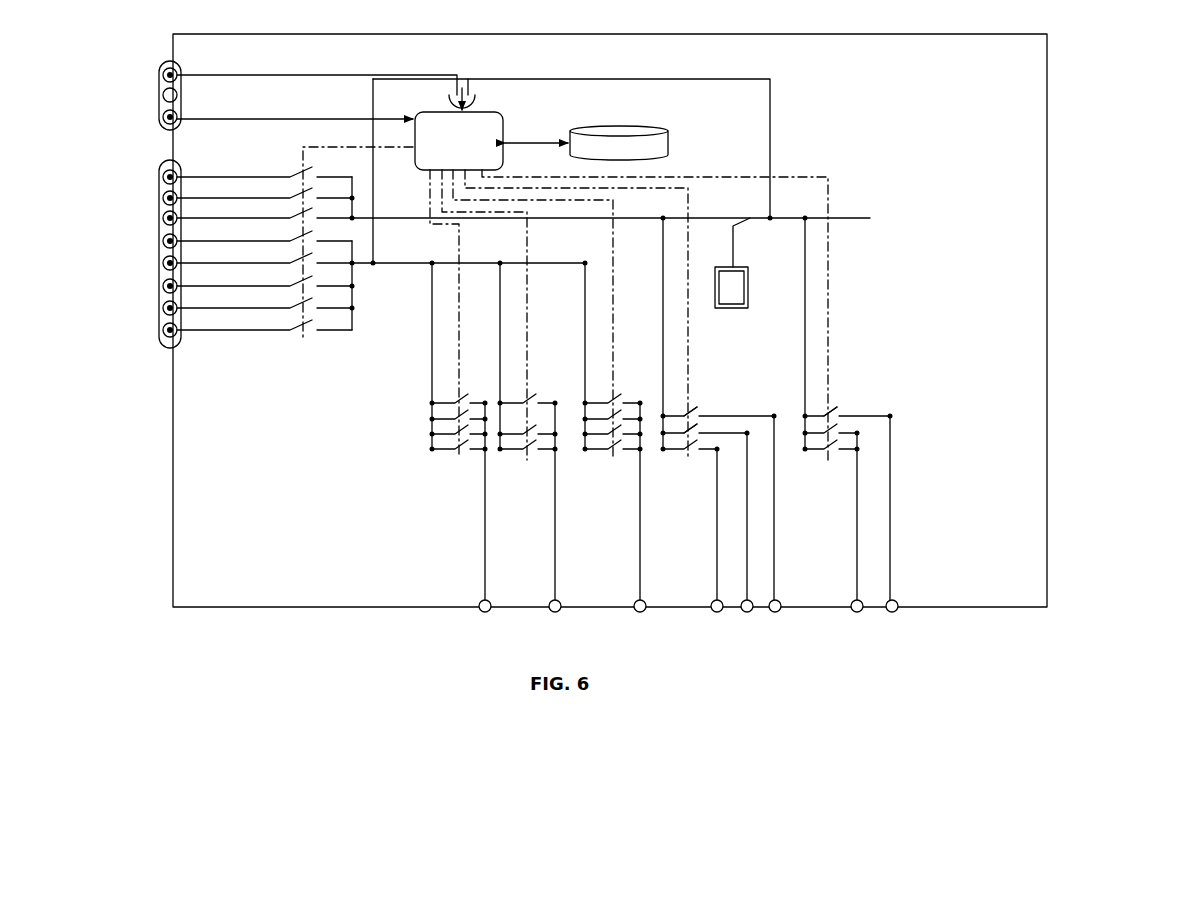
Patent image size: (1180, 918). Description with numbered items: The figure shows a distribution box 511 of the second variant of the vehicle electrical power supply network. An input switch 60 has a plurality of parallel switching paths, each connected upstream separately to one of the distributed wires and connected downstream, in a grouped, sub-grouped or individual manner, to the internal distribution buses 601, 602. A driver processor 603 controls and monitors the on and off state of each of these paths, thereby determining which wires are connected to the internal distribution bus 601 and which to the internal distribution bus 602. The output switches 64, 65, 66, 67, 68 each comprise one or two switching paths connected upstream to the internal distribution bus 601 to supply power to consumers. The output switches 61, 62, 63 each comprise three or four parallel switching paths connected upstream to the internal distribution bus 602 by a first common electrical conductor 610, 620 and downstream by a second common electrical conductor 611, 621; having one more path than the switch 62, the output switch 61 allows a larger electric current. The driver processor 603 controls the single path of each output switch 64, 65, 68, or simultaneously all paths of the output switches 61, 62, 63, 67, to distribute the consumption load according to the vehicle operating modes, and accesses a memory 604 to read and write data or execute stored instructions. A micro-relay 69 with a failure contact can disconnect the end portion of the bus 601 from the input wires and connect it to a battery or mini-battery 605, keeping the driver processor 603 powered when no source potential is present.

The distribution box 511 is at (1048, 304).
The input switch 60 is at (303, 340).
The internal distribution bus 601 is at (858, 218).
The internal distribution bus 602 is at (408, 266).
The driver processor 603 is at (503, 118).
The memory 604 is at (660, 125).
The battery or mini-battery 605 is at (748, 290).
The micro-relay 69 is at (752, 224).
The first common electrical conductor 610 is at (432, 370).
The second common electrical conductor 611 is at (485, 542).
The first common electrical conductor 620 is at (500, 352).
The second common electrical conductor 621 is at (555, 527).
The output switch 61 is at (455, 462).
The output switch 62 is at (524, 463).
The output switch 63 is at (607, 458).
The output switch 64 is at (681, 456).
The output switch 65 is at (700, 428).
The output switch 66 is at (684, 408).
The output switch 67 is at (826, 456).
The output switch 68 is at (822, 410).